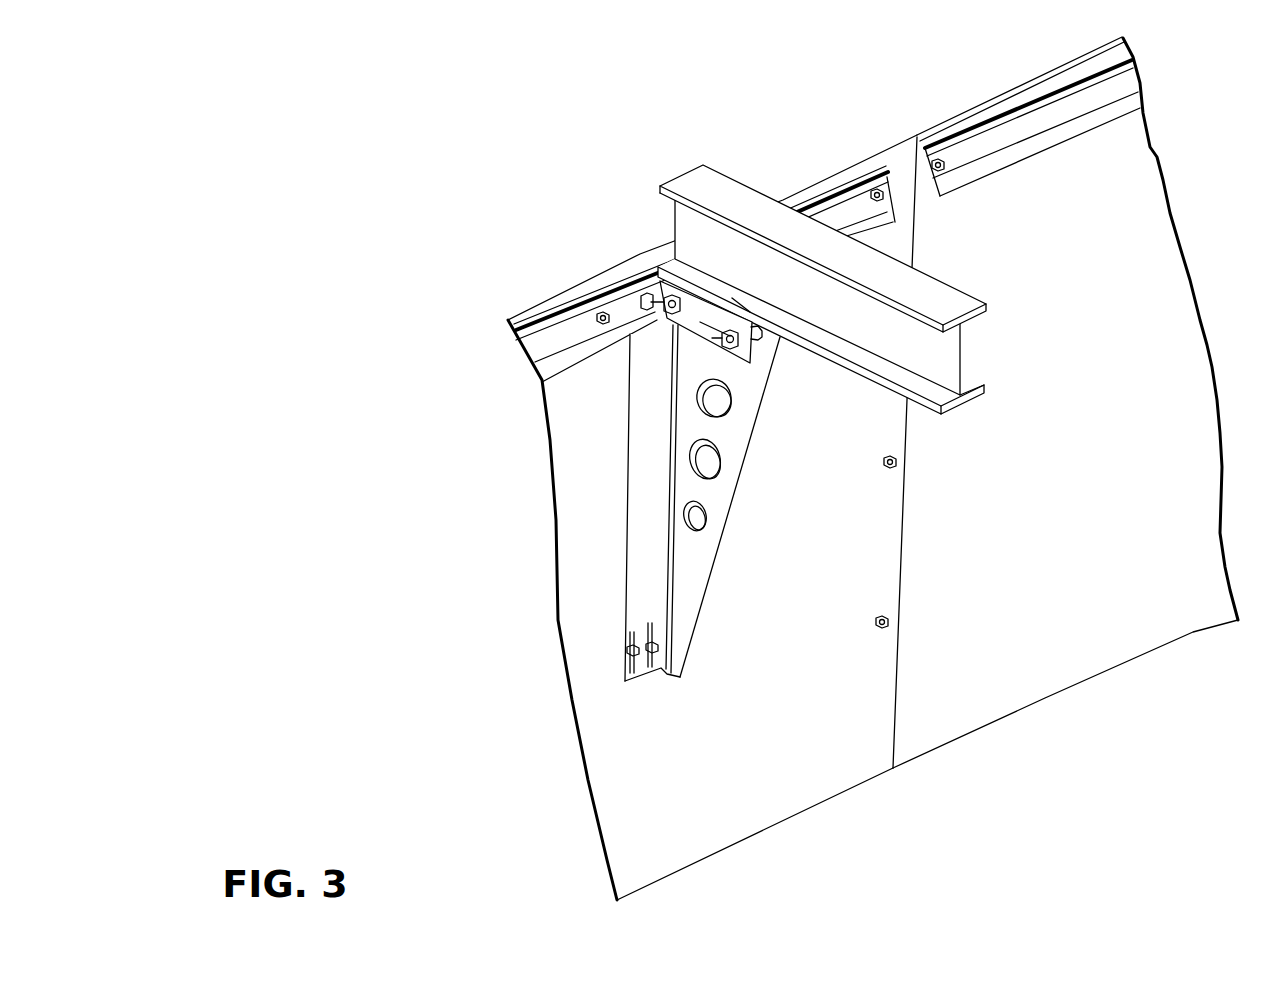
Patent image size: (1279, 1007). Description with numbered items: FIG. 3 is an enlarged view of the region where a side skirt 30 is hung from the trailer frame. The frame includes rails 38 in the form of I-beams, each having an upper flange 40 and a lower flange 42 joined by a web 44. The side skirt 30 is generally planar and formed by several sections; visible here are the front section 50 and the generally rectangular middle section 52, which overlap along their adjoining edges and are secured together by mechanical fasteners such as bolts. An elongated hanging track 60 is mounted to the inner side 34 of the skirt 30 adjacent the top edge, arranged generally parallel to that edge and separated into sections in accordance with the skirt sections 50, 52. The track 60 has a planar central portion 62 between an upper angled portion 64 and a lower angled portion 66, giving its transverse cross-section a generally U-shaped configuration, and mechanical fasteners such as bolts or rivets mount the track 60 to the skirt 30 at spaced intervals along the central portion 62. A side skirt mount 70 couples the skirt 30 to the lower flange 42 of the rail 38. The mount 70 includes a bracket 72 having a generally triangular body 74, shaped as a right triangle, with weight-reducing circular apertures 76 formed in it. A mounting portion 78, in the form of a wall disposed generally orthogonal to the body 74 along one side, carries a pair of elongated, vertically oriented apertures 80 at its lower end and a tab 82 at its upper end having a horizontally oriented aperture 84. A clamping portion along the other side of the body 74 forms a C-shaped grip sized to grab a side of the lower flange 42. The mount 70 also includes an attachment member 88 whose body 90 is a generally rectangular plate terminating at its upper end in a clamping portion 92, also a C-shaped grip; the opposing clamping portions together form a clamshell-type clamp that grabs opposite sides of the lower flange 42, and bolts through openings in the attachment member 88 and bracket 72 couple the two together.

The side skirt 30 is at (842, 468).
The inner side 34 is at (668, 838).
The rails 38 is at (853, 255).
The upper flange 40 is at (712, 190).
The lower flange 42 is at (962, 388).
The web 44 is at (965, 352).
The front section 50 is at (1065, 413).
The middle section 52 is at (681, 517).
The hanging track 60 is at (670, 286).
The central portion 62 is at (550, 345).
The upper angled portion 64 is at (590, 300).
The lower angled portion 66 is at (580, 368).
The side skirt mount 70 is at (665, 503).
The bracket 72 is at (700, 545).
The body 74 is at (745, 402).
The circular apertures 76 is at (705, 468).
The mounting portion 78 is at (637, 530).
The elongated apertures 80 is at (640, 637).
The tab 82 is at (637, 298).
The horizontally oriented aperture 84 is at (716, 263).
The attachment member 88 is at (768, 349).
The body 90 is at (710, 320).
The clamping portion 92 is at (732, 298).